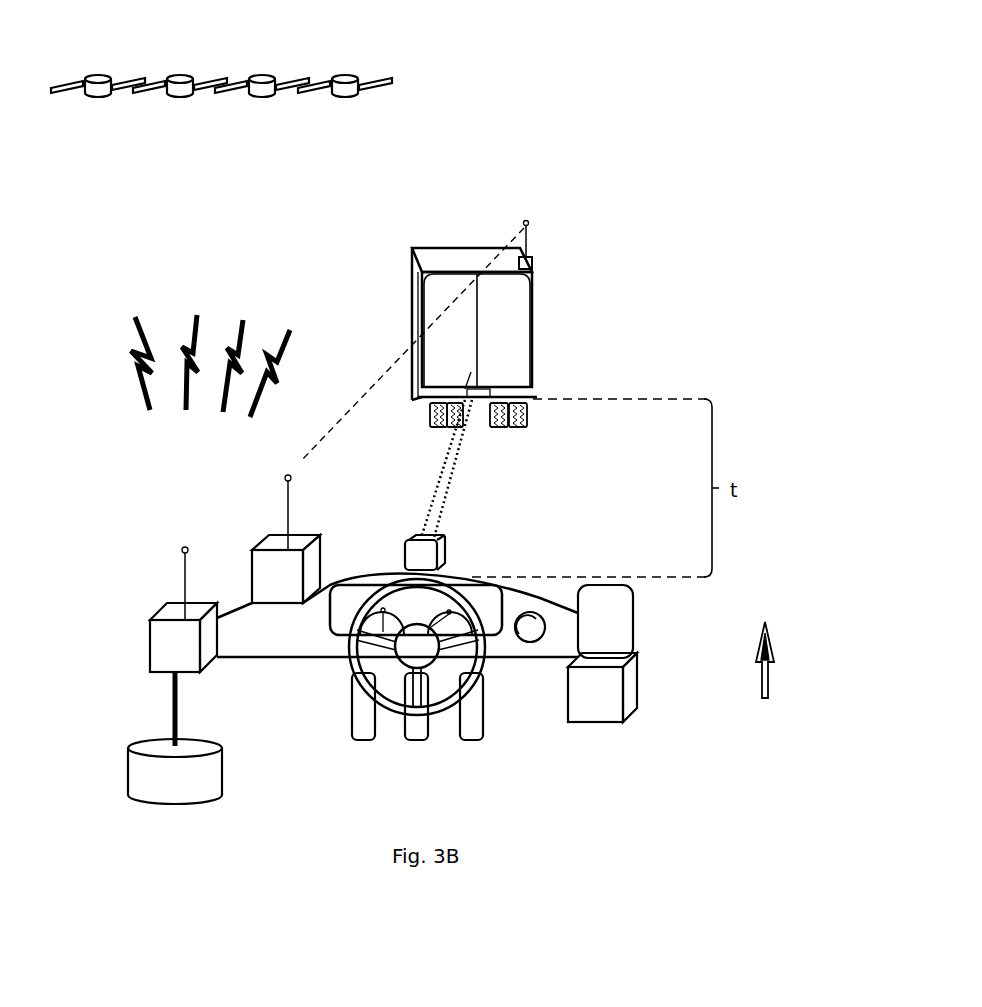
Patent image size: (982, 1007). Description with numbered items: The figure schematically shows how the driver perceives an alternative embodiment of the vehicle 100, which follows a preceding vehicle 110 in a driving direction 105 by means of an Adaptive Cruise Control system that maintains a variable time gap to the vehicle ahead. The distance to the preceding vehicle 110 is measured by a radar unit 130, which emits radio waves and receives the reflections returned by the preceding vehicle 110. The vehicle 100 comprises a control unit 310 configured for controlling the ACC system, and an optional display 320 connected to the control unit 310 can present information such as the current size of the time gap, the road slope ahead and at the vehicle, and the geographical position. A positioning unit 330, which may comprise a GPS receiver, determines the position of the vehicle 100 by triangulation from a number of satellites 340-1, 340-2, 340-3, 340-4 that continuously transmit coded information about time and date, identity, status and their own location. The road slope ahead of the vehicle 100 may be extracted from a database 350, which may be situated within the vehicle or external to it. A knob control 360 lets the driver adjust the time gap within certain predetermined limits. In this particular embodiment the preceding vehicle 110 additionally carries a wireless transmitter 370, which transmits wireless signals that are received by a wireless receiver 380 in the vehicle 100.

The satellite 340-1 is at (64, 85).
The satellite 340-2 is at (146, 85).
The satellite 340-3 is at (233, 86).
The satellite 340-4 is at (320, 86).
The wireless transmitter 370 is at (532, 257).
The preceding vehicle 110 is at (468, 337).
The radar unit 130 is at (440, 548).
The vehicle 100 is at (253, 640).
The wireless receiver 380 is at (295, 586).
The positioning unit 330 is at (193, 654).
The database 350 is at (185, 786).
The knob control 360 is at (525, 638).
The display 320 is at (622, 636).
The control unit 310 is at (610, 709).
The driving direction 105 is at (785, 660).